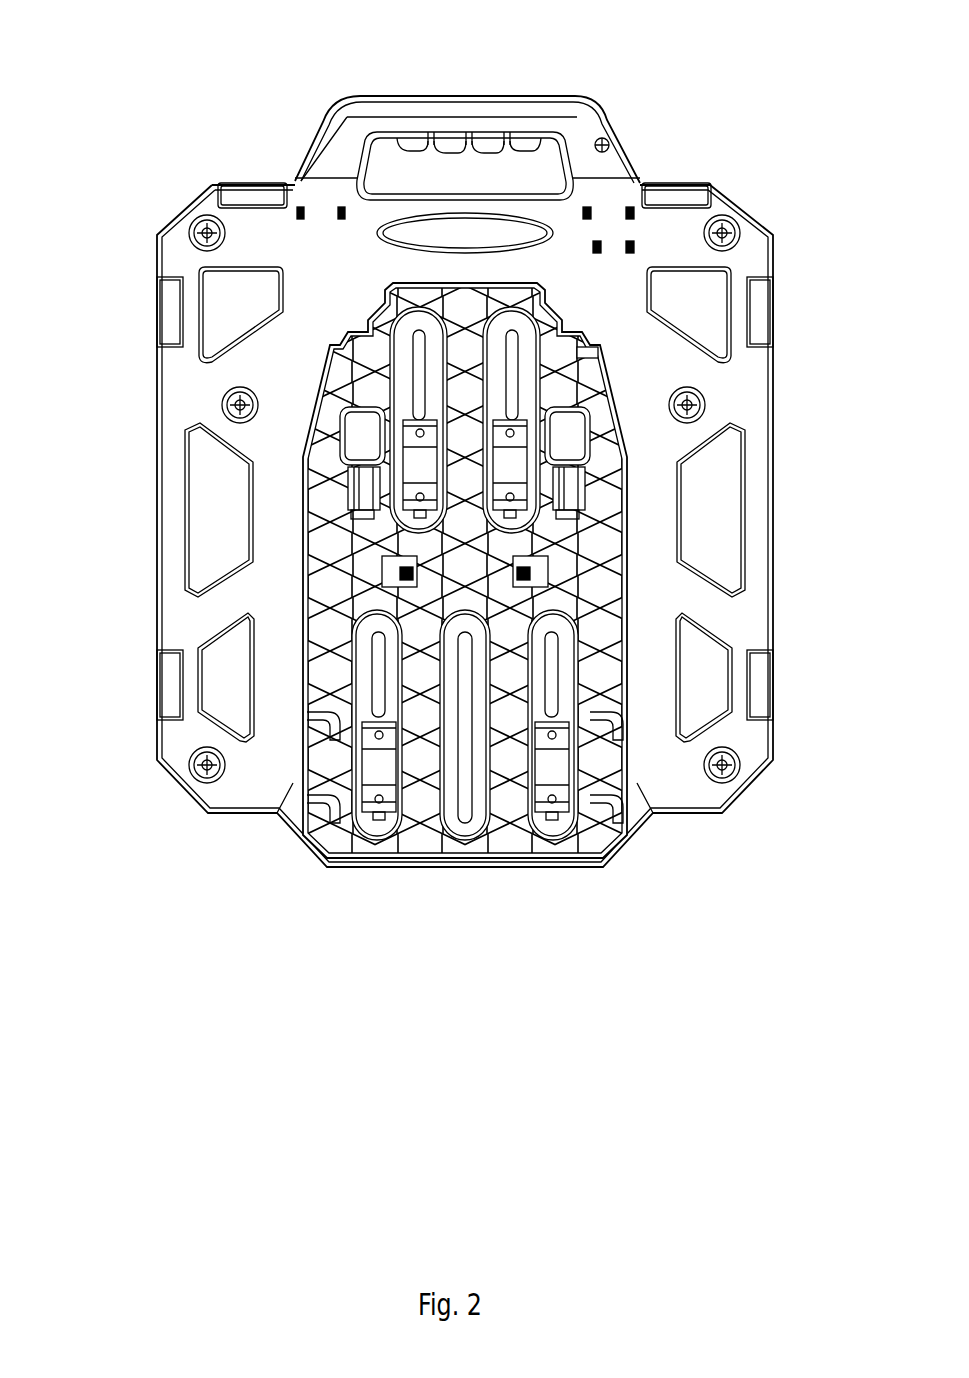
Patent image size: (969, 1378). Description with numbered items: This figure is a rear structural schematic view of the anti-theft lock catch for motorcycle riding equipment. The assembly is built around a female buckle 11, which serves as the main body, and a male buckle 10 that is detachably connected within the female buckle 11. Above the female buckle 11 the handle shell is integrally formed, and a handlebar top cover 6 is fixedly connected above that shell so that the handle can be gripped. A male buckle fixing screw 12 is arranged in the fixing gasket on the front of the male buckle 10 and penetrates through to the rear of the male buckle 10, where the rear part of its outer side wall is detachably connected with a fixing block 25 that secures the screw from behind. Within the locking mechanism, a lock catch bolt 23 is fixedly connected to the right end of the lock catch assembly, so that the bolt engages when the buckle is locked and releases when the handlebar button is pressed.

The handlebar top cover 6 is at (413, 107).
The male buckle 10 is at (435, 847).
The female buckle 11 is at (187, 385).
The male buckle fixing screw 12 is at (558, 770).
The lock catch bolt 23 is at (598, 353).
The fixing block 25 is at (606, 813).